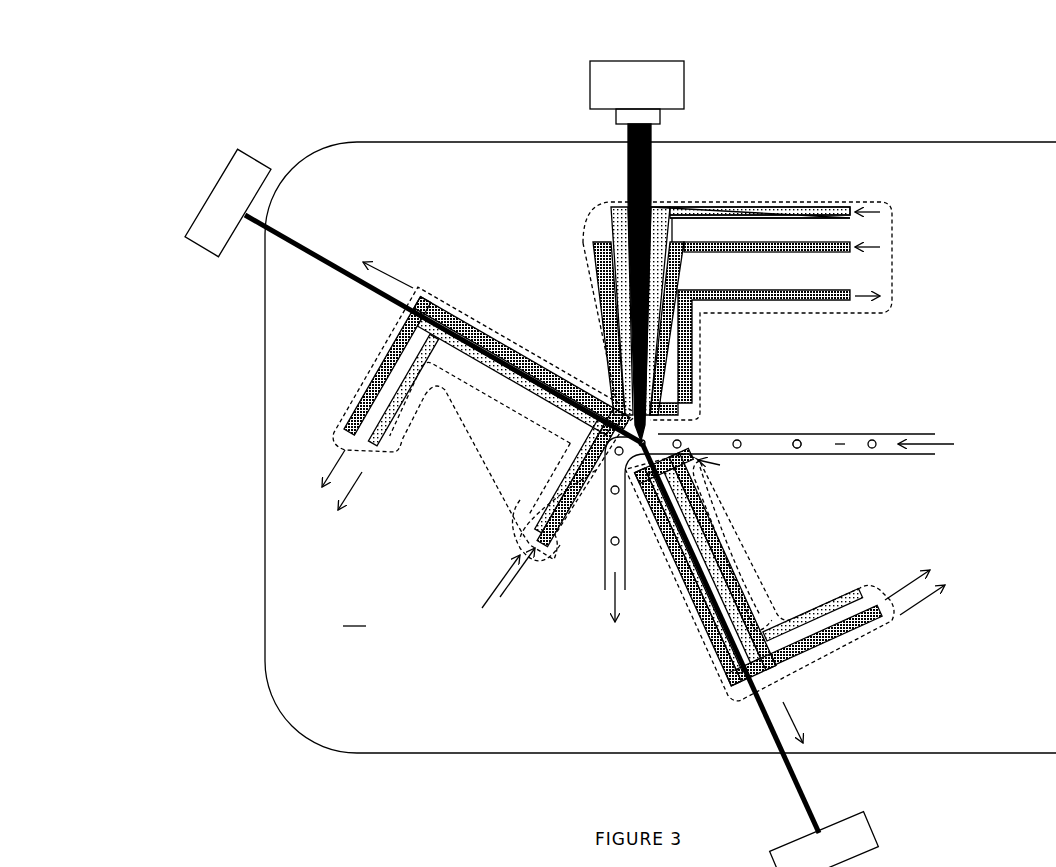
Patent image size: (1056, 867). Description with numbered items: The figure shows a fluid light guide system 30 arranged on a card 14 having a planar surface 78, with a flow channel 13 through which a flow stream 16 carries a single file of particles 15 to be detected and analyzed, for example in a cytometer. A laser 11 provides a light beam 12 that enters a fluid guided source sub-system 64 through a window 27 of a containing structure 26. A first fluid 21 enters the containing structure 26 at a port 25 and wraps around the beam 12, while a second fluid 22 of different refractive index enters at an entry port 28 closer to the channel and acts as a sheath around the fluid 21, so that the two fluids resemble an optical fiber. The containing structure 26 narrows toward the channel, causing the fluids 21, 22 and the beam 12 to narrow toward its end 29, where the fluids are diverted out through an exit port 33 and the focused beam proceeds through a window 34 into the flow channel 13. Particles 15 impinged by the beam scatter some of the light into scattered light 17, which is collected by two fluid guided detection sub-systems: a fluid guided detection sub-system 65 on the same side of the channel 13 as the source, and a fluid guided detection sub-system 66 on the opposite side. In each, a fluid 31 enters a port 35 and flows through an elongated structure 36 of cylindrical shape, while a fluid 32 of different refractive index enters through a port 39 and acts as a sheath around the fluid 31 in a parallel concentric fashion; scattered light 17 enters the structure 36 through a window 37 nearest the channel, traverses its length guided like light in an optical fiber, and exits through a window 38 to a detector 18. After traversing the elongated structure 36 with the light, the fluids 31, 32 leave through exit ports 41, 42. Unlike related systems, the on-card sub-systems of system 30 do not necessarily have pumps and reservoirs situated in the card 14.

The fluid light guide system 30 is at (396, 105).
The laser 11 is at (590, 96).
The light beam 12 is at (628, 152).
The flow channel 13 is at (820, 434).
The card 14 is at (960, 142).
The particles 15 is at (790, 447).
The flow stream 16 is at (833, 445).
The scattered light 17 is at (372, 262).
The detector 18 is at (185, 237).
The fluid 21 is at (612, 215).
The fluid 22 is at (598, 262).
The port 25 is at (760, 210).
The containing structure 26 is at (612, 302).
The window 27 is at (620, 205).
The entry port 28 is at (705, 250).
The end 29 is at (618, 334).
The fluid 31 is at (378, 452).
The fluid 32 is at (343, 440).
The exit port 33 is at (720, 298).
The window 34 is at (660, 420).
The port 35 is at (525, 510).
The elongated structure 36 is at (520, 340).
The window 37 is at (590, 475).
The window 38 is at (410, 318).
The port 39 is at (563, 517).
The port 41 is at (430, 380).
The port 42 is at (376, 372).
The fluid guided source sub-system 64 is at (870, 313).
The fluid guided detection sub-system 65 is at (465, 375).
The fluid guided detection sub-system 66 is at (752, 612).
The planar surface 78 is at (354, 616).